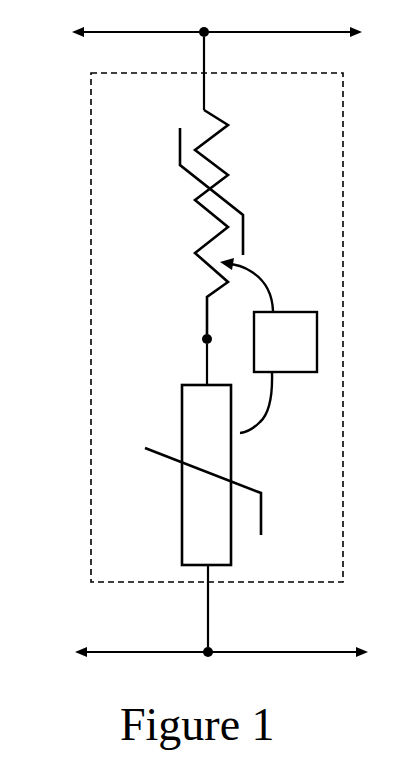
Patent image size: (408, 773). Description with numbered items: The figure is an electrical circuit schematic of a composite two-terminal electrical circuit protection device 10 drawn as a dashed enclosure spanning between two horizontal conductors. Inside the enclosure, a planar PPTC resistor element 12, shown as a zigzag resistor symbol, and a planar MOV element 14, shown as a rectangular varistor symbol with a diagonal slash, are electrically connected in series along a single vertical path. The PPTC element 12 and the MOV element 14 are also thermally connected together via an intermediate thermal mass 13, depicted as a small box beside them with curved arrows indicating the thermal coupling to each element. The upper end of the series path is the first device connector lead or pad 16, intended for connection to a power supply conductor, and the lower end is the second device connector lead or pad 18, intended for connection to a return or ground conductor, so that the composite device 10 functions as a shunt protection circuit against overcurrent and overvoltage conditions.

The two-terminal electrical circuit protection device 10 is at (85, 477).
The planar PPTC resistor element 12 is at (202, 205).
The intermediate thermal mass 13 is at (268, 345).
The planar MOV element 14 is at (182, 423).
The first device connector lead or pad 16 is at (203, 88).
The second device connector lead or pad 18 is at (207, 608).